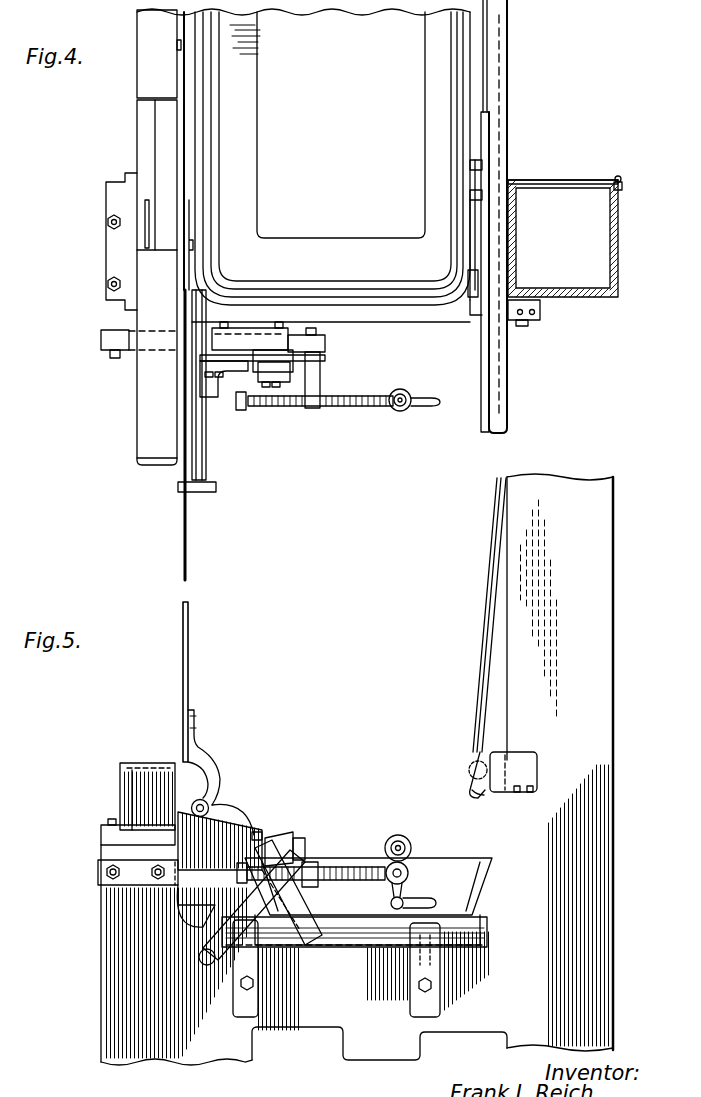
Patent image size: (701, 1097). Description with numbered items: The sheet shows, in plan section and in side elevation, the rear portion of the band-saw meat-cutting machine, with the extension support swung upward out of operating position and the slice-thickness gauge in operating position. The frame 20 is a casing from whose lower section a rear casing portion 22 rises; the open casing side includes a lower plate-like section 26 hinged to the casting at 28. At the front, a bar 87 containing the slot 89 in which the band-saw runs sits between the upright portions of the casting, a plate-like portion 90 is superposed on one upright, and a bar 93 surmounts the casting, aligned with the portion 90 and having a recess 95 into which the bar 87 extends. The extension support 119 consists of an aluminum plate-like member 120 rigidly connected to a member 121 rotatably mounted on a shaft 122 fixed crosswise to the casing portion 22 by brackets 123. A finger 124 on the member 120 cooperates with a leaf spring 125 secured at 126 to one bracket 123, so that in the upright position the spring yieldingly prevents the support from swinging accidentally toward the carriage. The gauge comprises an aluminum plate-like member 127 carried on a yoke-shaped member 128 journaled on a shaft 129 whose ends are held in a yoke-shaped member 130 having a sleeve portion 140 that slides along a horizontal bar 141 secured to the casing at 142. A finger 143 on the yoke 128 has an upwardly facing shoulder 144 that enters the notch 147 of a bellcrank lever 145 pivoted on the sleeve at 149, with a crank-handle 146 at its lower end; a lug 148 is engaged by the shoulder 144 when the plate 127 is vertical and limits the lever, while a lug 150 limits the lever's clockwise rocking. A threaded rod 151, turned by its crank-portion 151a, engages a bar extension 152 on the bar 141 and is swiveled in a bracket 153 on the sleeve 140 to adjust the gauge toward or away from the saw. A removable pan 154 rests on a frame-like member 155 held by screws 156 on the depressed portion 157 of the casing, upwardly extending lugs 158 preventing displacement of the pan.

In FIG. 4, the frame 20 is at (618, 258).
In FIG. 5, the frame 20 is at (160, 1030).
In FIG. 4, the casing portion 22 is at (618, 225).
In FIG. 5, the casing portion 22 is at (600, 640).
In FIG. 4, the lower plate-like section 26 is at (561, 180).
In FIG. 4, the hinge 28 is at (622, 178).
In FIG. 4, the bar 87 is at (144, 124).
In FIG. 4, the slot 89 is at (143, 232).
In FIG. 4, the plate-like portion 90 is at (145, 19).
In FIG. 4, the bar 93 is at (147, 422).
In FIG. 5, the bar 93 is at (153, 770).
In FIG. 4, the recess 95 is at (154, 148).
In FIG. 5, the recess 95 is at (138, 778).
In FIG. 4, the extension support 119 is at (487, 135).
In FIG. 5, the extension support 119 is at (490, 632).
In FIG. 4, the plate-like member 120 is at (485, 178).
In FIG. 5, the plate-like member 120 is at (488, 665).
In FIG. 4, the member 121 is at (470, 185).
In FIG. 4, the shaft 122 is at (470, 245).
In FIG. 4, the brackets 123 is at (540, 310).
In FIG. 5, the brackets 123 is at (537, 762).
In FIG. 4, the finger 124 is at (470, 320).
In FIG. 5, the finger 124 is at (468, 790).
In FIG. 5, the leaf spring 125 is at (482, 800).
In FIG. 4, the spring securing point 126 is at (530, 326).
In FIG. 5, the spring securing point 126 is at (533, 788).
In FIG. 4, the plate-like member 127 is at (183, 535).
In FIG. 5, the plate-like member 127 is at (189, 660).
In FIG. 4, the yoke-shaped member 128 is at (210, 485).
In FIG. 5, the yoke-shaped member 128 is at (203, 765).
In FIG. 4, the shaft 129 is at (205, 455).
In FIG. 5, the shaft 129 is at (210, 803).
In FIG. 4, the yoke-shaped member 130 is at (196, 494).
In FIG. 5, the yoke-shaped member 130 is at (245, 815).
In FIG. 4, the sleeve portion 140 is at (248, 324).
In FIG. 5, the sleeve portion 140 is at (220, 907).
In FIG. 4, the bar 141 is at (293, 360).
In FIG. 5, the bar 141 is at (182, 908).
In FIG. 4, the bar securing point 142 is at (160, 360).
In FIG. 5, the bar securing point 142 is at (155, 880).
In FIG. 4, the finger 143 is at (240, 372).
In FIG. 5, the finger 143 is at (264, 832).
In FIG. 4, the shoulder 144 is at (262, 358).
In FIG. 5, the shoulder 144 is at (293, 846).
In FIG. 4, the lever 145 is at (277, 382).
In FIG. 5, the lever 145 is at (308, 864).
In FIG. 5, the crank-handle 146 is at (203, 962).
In FIG. 5, the notch 147 is at (308, 838).
In FIG. 4, the lug 148 is at (325, 340).
In FIG. 5, the lug 148 is at (262, 836).
In FIG. 5, the pivot 149 is at (287, 900).
In FIG. 4, the lug 150 is at (305, 408).
In FIG. 5, the lug 150 is at (330, 866).
In FIG. 4, the threaded rod 151 is at (382, 408).
In FIG. 5, the threaded rod 151 is at (402, 862).
In FIG. 4, the crank-portion 151a is at (430, 408).
In FIG. 5, the crank-portion 151a is at (411, 848).
In FIG. 4, the bar extension 152 is at (320, 380).
In FIG. 5, the bar extension 152 is at (312, 888).
In FIG. 4, the bracket 153 is at (248, 410).
In FIG. 5, the bracket 153 is at (240, 866).
In FIG. 4, the pan 154 is at (331, 167).
In FIG. 5, the pan 154 is at (378, 899).
In FIG. 5, the frame-like member 155 is at (478, 932).
In FIG. 5, the screws 156 is at (250, 988).
In FIG. 5, the depressed portion 157 is at (367, 950).
In FIG. 5, the lugs 158 is at (470, 900).